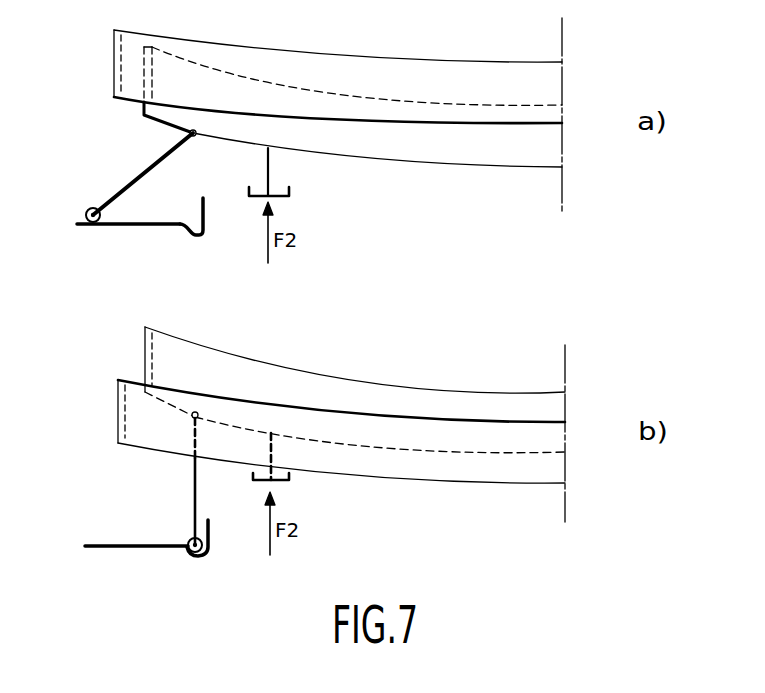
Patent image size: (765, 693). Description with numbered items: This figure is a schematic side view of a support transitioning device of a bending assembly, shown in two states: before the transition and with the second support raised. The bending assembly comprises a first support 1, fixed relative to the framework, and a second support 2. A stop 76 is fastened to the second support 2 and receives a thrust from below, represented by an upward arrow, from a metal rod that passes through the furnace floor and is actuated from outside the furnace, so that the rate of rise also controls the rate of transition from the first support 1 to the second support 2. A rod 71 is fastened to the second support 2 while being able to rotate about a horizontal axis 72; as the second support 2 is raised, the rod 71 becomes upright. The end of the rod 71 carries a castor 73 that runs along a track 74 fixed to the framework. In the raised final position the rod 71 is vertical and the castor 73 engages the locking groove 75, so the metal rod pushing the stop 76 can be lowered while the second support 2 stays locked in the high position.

The first support 1 is at (384, 55).
The second support 2 is at (474, 98).
The rod 71 is at (144, 172).
The horizontal axis 72 is at (190, 134).
The castor 73 is at (88, 209).
The track 74 is at (138, 227).
The locking groove 75 is at (199, 238).
The stop 76 is at (284, 202).